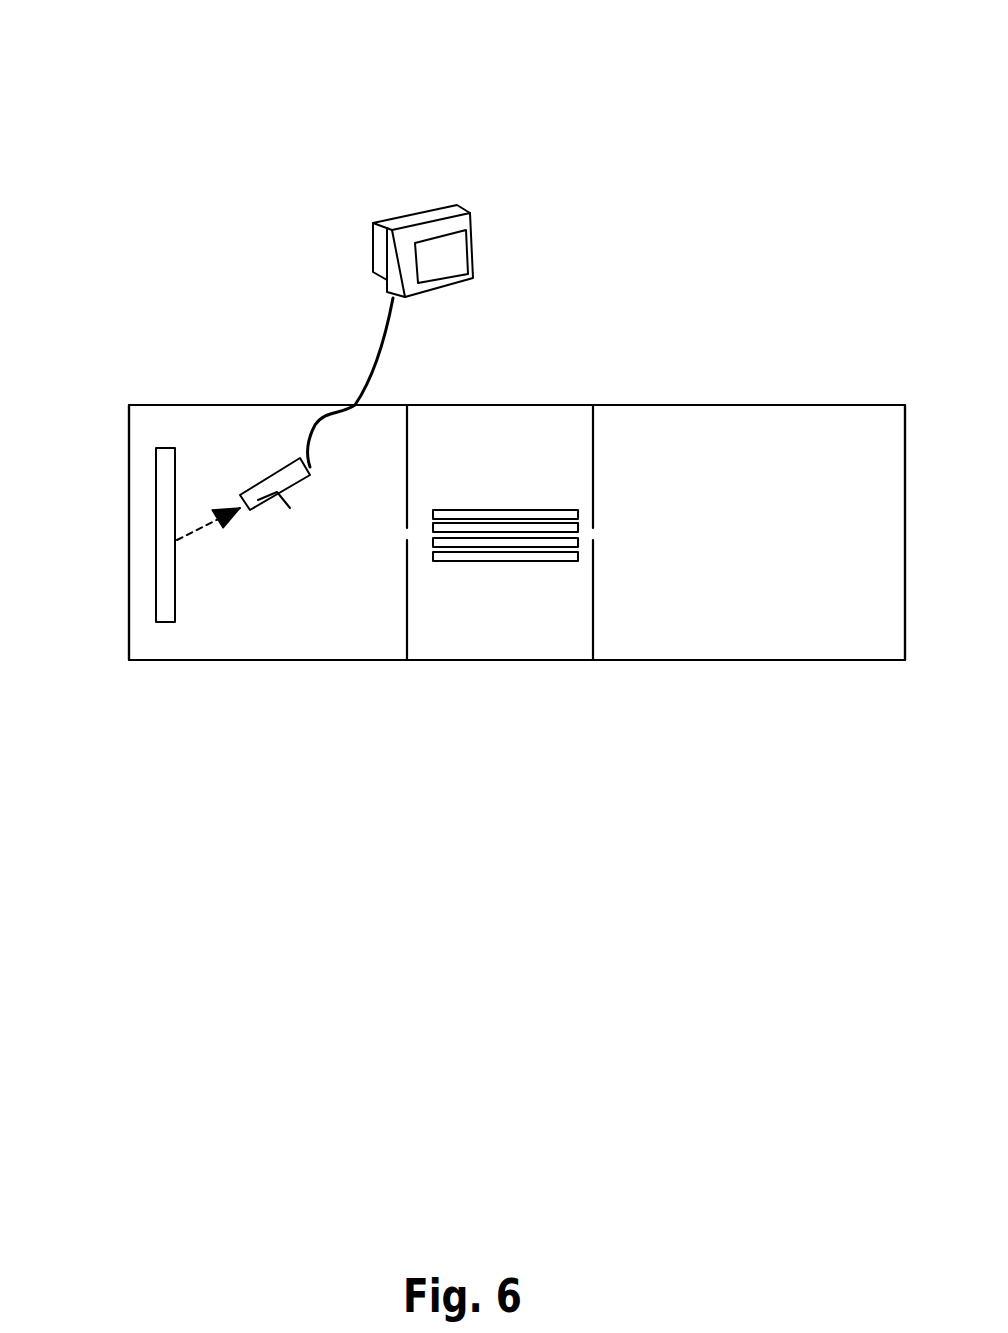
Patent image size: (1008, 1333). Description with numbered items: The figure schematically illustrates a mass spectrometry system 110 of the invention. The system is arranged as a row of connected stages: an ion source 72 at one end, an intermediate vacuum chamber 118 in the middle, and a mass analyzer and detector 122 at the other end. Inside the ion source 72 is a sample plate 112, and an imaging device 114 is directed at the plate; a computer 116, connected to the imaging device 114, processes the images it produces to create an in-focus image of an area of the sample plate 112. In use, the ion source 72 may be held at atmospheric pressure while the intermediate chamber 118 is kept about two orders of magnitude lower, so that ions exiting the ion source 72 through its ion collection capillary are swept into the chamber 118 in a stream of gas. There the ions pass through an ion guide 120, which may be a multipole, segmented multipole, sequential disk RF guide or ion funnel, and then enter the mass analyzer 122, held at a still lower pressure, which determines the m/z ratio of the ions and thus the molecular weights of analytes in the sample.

The mass spectrometry system 110 is at (168, 83).
The ion source 72 is at (233, 655).
The sample plate 112 is at (163, 523).
The imaging device 114 is at (290, 508).
The computer 116 is at (427, 336).
The intermediate vacuum chamber 118 is at (489, 652).
The ion guide 120 is at (513, 508).
The mass analyzer and detector 122 is at (697, 652).